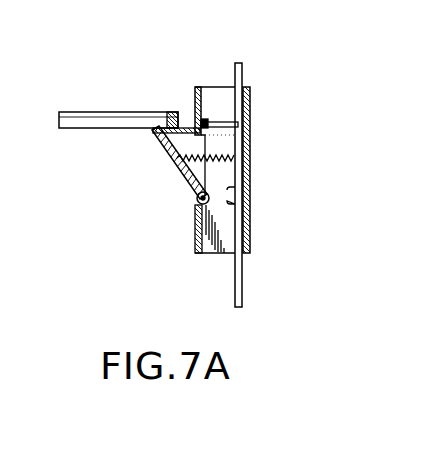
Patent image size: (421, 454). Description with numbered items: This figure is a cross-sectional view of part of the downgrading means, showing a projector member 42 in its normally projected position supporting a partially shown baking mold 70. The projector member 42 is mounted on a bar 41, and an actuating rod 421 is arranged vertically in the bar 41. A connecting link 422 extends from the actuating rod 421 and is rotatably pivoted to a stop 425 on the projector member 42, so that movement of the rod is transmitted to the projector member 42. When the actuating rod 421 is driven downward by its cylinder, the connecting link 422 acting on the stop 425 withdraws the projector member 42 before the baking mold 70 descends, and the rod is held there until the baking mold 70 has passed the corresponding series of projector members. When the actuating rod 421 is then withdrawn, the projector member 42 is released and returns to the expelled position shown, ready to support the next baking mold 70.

The baking mold 70 is at (99, 128).
The projector member 42 is at (181, 167).
The connecting link 422 is at (222, 122).
The stop 425 is at (200, 120).
The actuating rod 421 is at (242, 267).
The bar 41 is at (250, 128).